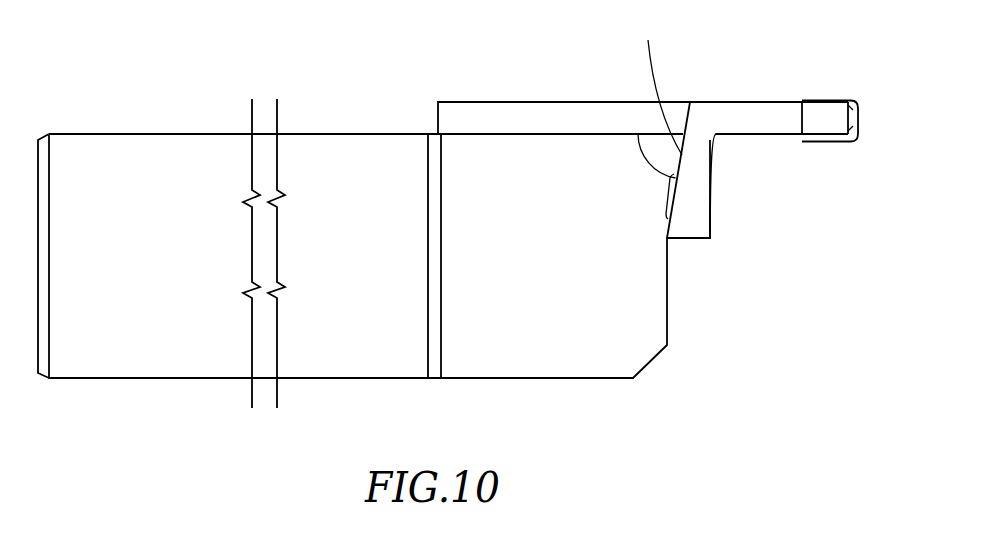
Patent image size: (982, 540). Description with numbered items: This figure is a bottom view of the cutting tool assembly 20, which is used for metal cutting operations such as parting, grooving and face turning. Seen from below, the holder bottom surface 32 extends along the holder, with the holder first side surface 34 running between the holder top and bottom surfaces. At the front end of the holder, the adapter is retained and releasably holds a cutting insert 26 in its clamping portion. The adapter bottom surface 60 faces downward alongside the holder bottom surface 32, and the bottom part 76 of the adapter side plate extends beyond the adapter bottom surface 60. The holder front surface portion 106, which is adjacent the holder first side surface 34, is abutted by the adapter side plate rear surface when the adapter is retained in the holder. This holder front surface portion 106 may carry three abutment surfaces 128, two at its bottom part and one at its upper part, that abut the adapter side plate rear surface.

The cutting tool assembly 20 is at (205, 90).
The cutting insert 26 is at (845, 108).
The holder bottom surface 32 is at (546, 340).
The holder first side surface 34 is at (380, 133).
The adapter bottom surface 60 is at (472, 118).
The bottom part of the adapter side plate 76 is at (697, 192).
The holder front surface portion 106 is at (684, 150).
The abutment surfaces 128 is at (682, 158).